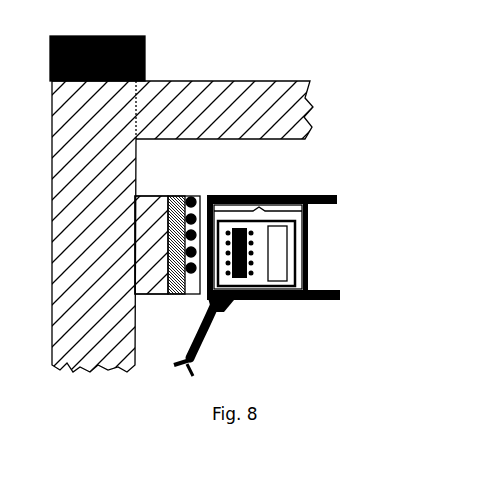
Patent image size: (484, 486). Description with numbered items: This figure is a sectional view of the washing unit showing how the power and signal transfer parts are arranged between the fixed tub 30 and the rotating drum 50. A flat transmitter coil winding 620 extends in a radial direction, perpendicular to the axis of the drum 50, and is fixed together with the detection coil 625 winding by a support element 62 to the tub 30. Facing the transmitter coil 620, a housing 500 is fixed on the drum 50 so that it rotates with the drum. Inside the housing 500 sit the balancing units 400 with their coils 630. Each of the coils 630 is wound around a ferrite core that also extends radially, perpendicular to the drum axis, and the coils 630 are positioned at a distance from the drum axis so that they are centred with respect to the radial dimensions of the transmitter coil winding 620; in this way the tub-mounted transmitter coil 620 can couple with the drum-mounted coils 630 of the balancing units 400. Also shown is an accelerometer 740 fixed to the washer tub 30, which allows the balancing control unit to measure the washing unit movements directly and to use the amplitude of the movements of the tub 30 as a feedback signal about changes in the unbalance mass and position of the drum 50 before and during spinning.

The tub 30 is at (313, 95).
The accelerometer 740 is at (102, 36).
The support element 62 is at (194, 171).
The transmitter coil winding 620 is at (198, 278).
The detection coil 625 is at (190, 196).
The housing 500 is at (293, 212).
The balancing units 400 is at (263, 226).
The coils 630 is at (268, 282).
The drum 50 is at (197, 344).